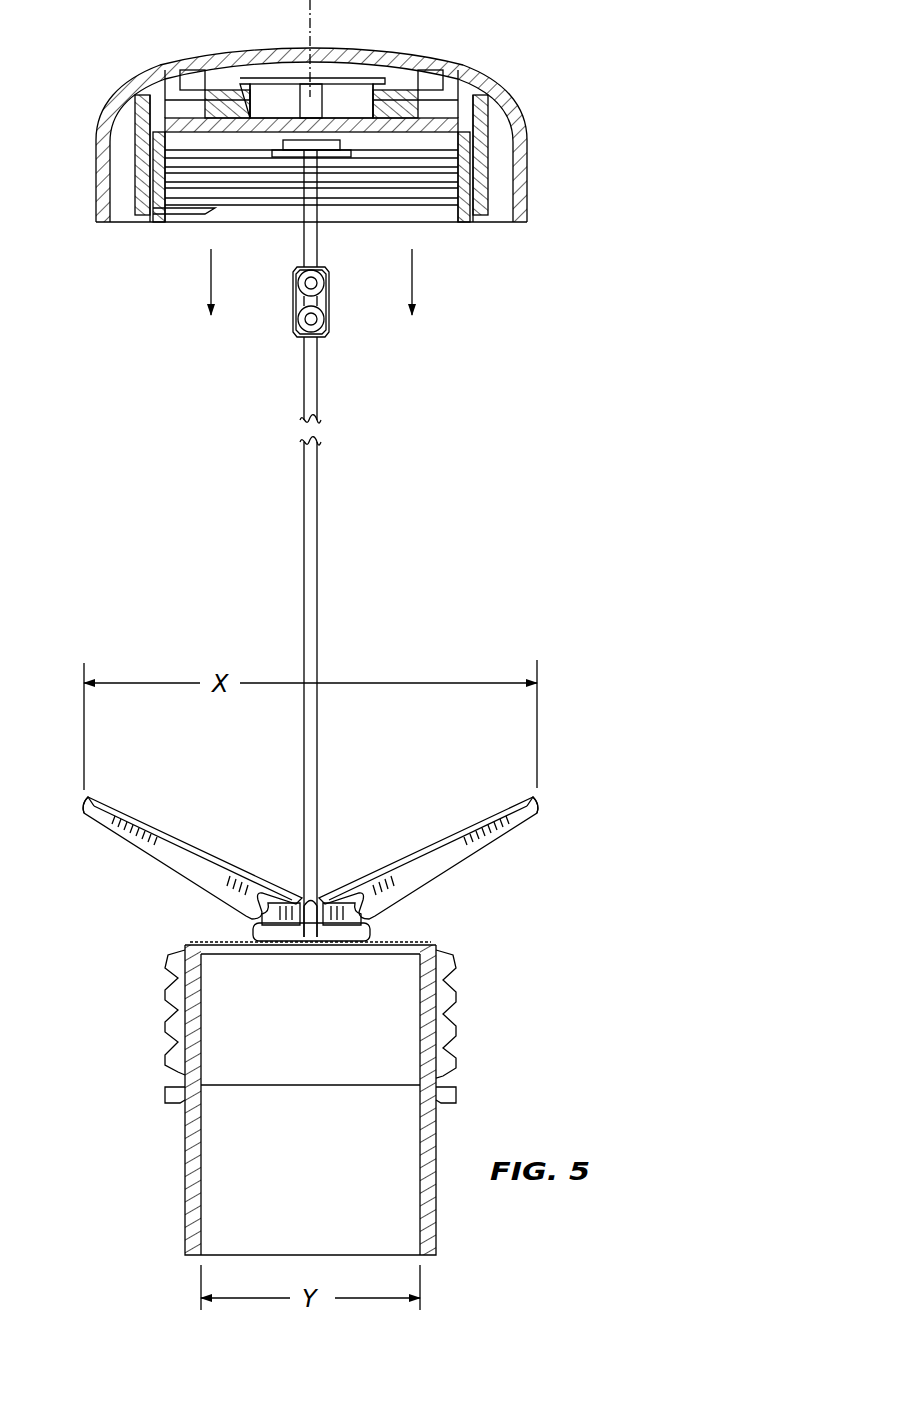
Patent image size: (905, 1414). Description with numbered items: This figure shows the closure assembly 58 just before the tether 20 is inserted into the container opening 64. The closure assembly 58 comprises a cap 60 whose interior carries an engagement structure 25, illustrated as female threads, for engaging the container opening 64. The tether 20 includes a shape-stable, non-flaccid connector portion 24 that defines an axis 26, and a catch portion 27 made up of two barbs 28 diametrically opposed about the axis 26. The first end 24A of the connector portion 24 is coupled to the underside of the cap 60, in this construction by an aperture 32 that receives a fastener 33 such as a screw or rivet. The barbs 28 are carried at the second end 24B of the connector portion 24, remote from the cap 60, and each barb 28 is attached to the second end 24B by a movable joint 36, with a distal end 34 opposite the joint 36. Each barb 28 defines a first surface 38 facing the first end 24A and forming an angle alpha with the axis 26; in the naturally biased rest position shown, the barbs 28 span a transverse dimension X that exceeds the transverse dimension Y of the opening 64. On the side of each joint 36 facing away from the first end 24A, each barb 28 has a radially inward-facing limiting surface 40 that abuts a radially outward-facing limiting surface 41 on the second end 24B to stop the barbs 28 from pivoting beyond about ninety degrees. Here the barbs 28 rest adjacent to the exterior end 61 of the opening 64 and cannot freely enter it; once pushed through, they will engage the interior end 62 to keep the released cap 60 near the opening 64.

The tether 20 is at (392, 453).
The connector portion 24 is at (310, 653).
The first end of the connector portion 24A is at (443, 253).
The second end of the connector portion 24B is at (478, 937).
The engagement structure 25 is at (440, 203).
The axis 26 is at (306, 22).
The catch portion 27 is at (315, 851).
The barbs 28 is at (310, 850).
The aperture 32 is at (298, 147).
The fastener 33 is at (303, 132).
The distal end 34 is at (86, 803).
The movable joint 36 is at (342, 878).
The first surface 38 is at (157, 827).
The limiting surface 40 is at (250, 918).
The limiting surface 41 is at (382, 938).
The closure assembly 58 is at (329, 139).
The cap 60 is at (520, 167).
The exterior end of the container opening 61 is at (405, 943).
The interior end of the container opening 62 is at (347, 1094).
The container opening 64 is at (430, 1030).